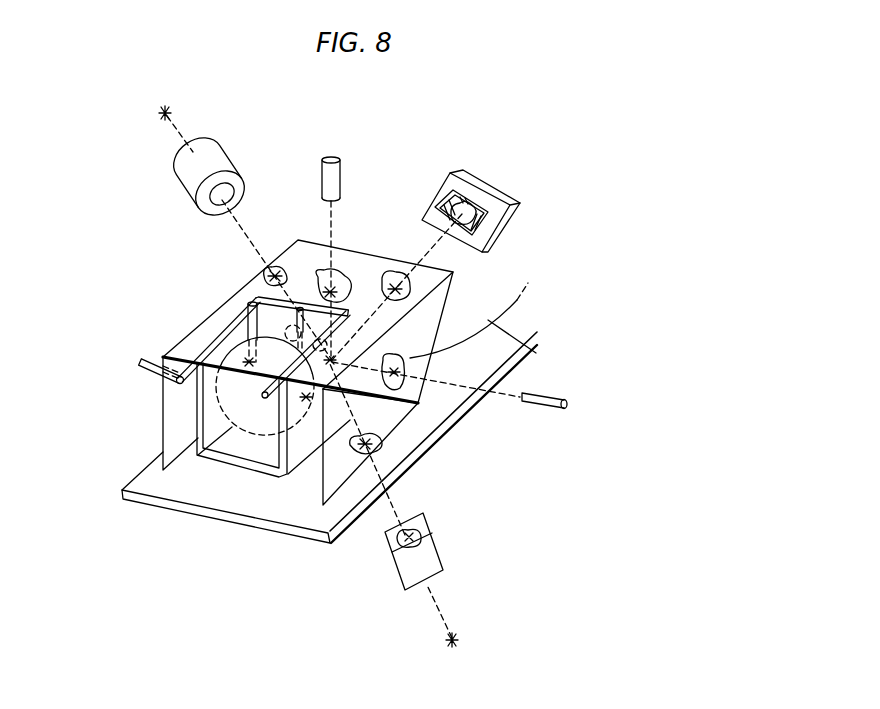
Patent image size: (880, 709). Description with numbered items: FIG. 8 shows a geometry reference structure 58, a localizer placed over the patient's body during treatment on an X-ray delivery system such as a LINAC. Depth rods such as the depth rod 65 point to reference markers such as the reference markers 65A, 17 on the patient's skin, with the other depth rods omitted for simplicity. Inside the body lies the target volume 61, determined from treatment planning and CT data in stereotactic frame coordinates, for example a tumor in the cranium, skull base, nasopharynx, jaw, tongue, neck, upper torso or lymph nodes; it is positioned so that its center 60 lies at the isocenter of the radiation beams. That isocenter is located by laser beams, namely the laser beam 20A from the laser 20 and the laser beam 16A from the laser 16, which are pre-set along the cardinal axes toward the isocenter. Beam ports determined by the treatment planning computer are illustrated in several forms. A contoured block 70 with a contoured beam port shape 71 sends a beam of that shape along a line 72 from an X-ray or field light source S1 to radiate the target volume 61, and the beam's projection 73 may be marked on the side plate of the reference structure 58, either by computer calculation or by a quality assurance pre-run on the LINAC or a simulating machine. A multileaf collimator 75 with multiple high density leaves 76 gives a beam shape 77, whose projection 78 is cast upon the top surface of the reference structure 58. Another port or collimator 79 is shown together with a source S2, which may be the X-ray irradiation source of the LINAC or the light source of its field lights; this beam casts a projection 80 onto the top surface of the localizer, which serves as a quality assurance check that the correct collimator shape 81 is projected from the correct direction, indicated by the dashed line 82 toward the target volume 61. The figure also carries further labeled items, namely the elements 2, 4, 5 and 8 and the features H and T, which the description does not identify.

The pin 2 is at (293, 332).
The yoke 4 is at (252, 348).
The cradle frame 5 is at (195, 410).
The base plate 8 is at (160, 505).
The laser 16 is at (332, 157).
The laser beam 16A is at (332, 226).
The reference marker 17 is at (249, 363).
The laser 20 is at (546, 404).
The laser beam 20A is at (503, 393).
The reference structure 58 is at (217, 303).
The target center 60 is at (390, 330).
The target volume 61 is at (426, 398).
The depth rod 65 is at (433, 443).
The reference marker 65A is at (335, 398).
The contoured block 70 is at (430, 533).
The contoured beam port shape 71 is at (420, 527).
The beam line 72 is at (390, 512).
The beam projection 73 is at (380, 448).
The multileaf collimator 75 is at (445, 176).
The high density leaves 76 is at (457, 190).
The beam shape 77 is at (477, 205).
The beam shape projection 78 is at (393, 278).
The collimator 79 is at (193, 178).
The projection 80 is at (283, 273).
The collimator shape 81 is at (236, 196).
The dashed line 82 is at (232, 214).
The sphere H is at (250, 430).
The source S1 is at (458, 640).
The source S2 is at (163, 113).
The trajectory T is at (536, 352).